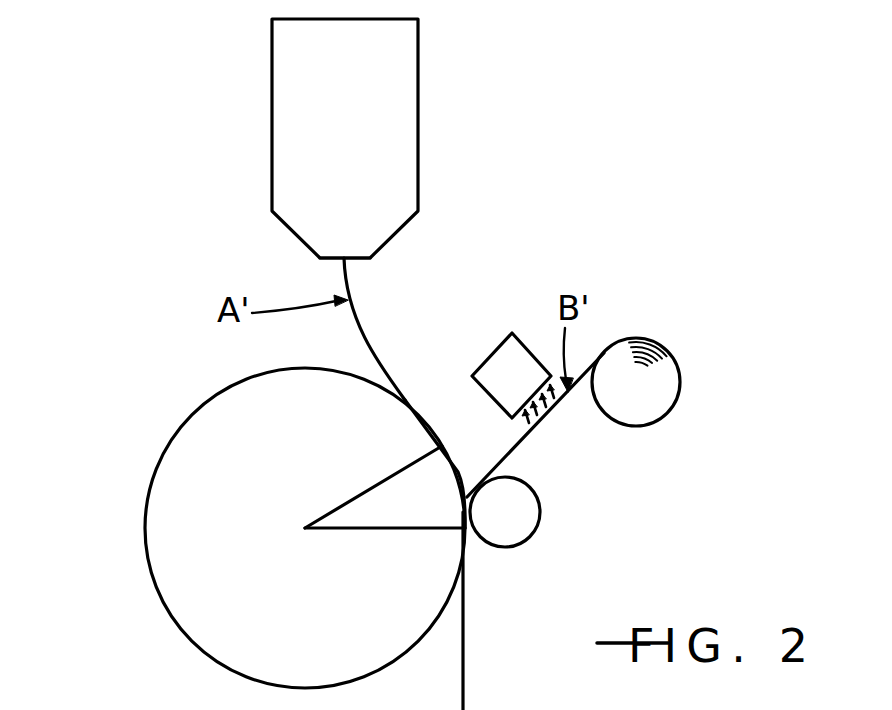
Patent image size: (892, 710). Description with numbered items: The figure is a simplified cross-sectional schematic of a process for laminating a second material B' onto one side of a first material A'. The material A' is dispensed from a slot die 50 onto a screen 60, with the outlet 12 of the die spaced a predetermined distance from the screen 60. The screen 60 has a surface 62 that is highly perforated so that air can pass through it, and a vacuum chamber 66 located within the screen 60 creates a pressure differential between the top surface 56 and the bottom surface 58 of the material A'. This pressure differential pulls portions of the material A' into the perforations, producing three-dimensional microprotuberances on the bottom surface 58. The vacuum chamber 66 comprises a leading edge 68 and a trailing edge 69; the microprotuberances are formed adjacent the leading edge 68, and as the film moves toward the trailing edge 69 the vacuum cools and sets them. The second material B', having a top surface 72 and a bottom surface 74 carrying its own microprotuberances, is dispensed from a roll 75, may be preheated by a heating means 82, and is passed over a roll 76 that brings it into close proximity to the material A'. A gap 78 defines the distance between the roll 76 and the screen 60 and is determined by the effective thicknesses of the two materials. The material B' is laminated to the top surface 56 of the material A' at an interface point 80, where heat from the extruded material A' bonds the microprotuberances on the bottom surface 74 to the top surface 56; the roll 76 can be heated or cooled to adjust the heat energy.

The outlet 12 is at (330, 260).
The slot die 50 is at (272, 115).
The top surface 56 is at (375, 353).
The bottom surface 58 is at (361, 332).
The screen 60 is at (263, 522).
The surface 62 is at (197, 407).
The vacuum chamber 66 is at (433, 495).
The leading edge 68 is at (394, 473).
The trailing edge 69 is at (378, 530).
The top surface 72 is at (559, 402).
The bottom surface 74 is at (518, 443).
The roll 75 is at (647, 338).
The roll 76 is at (548, 521).
The gap 78 is at (472, 533).
The interface point 80 is at (523, 522).
The heating means 82 is at (514, 332).